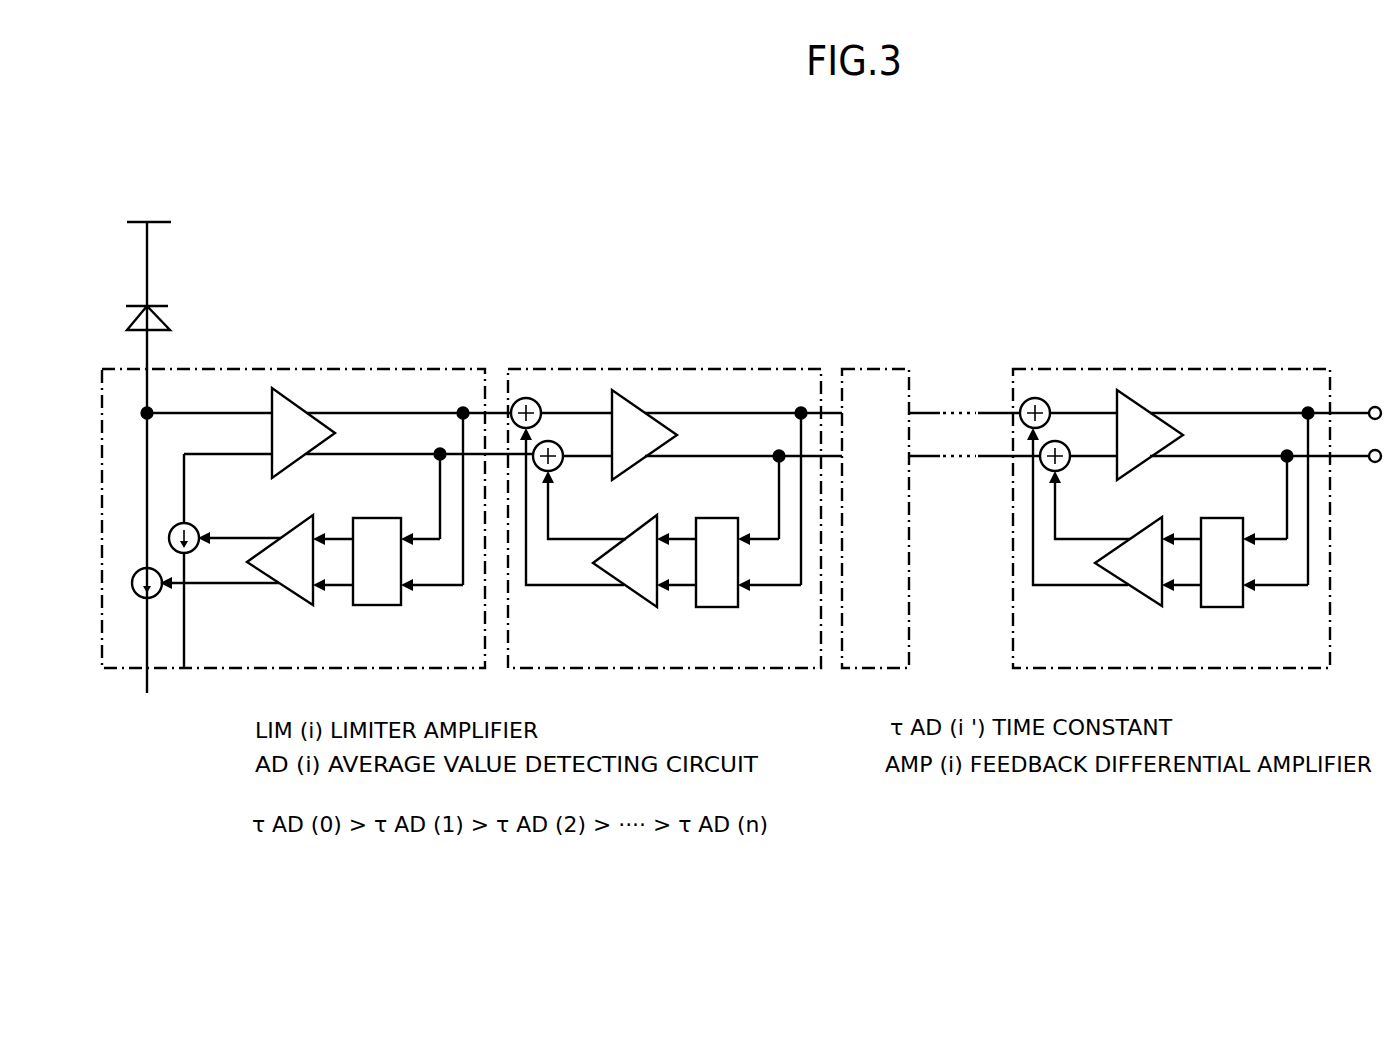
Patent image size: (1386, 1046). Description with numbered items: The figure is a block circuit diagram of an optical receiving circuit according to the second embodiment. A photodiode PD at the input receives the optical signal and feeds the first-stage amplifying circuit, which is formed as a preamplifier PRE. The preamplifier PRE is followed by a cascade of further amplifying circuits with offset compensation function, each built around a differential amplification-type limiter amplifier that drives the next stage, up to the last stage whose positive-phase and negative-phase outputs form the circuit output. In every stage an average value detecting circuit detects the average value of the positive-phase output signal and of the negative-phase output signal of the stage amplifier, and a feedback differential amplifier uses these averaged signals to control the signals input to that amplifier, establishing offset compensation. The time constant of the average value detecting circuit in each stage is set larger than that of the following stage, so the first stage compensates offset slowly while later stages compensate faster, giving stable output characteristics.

The photodiode PD is at (156, 319).
The preamplifier PRE is at (306, 410).